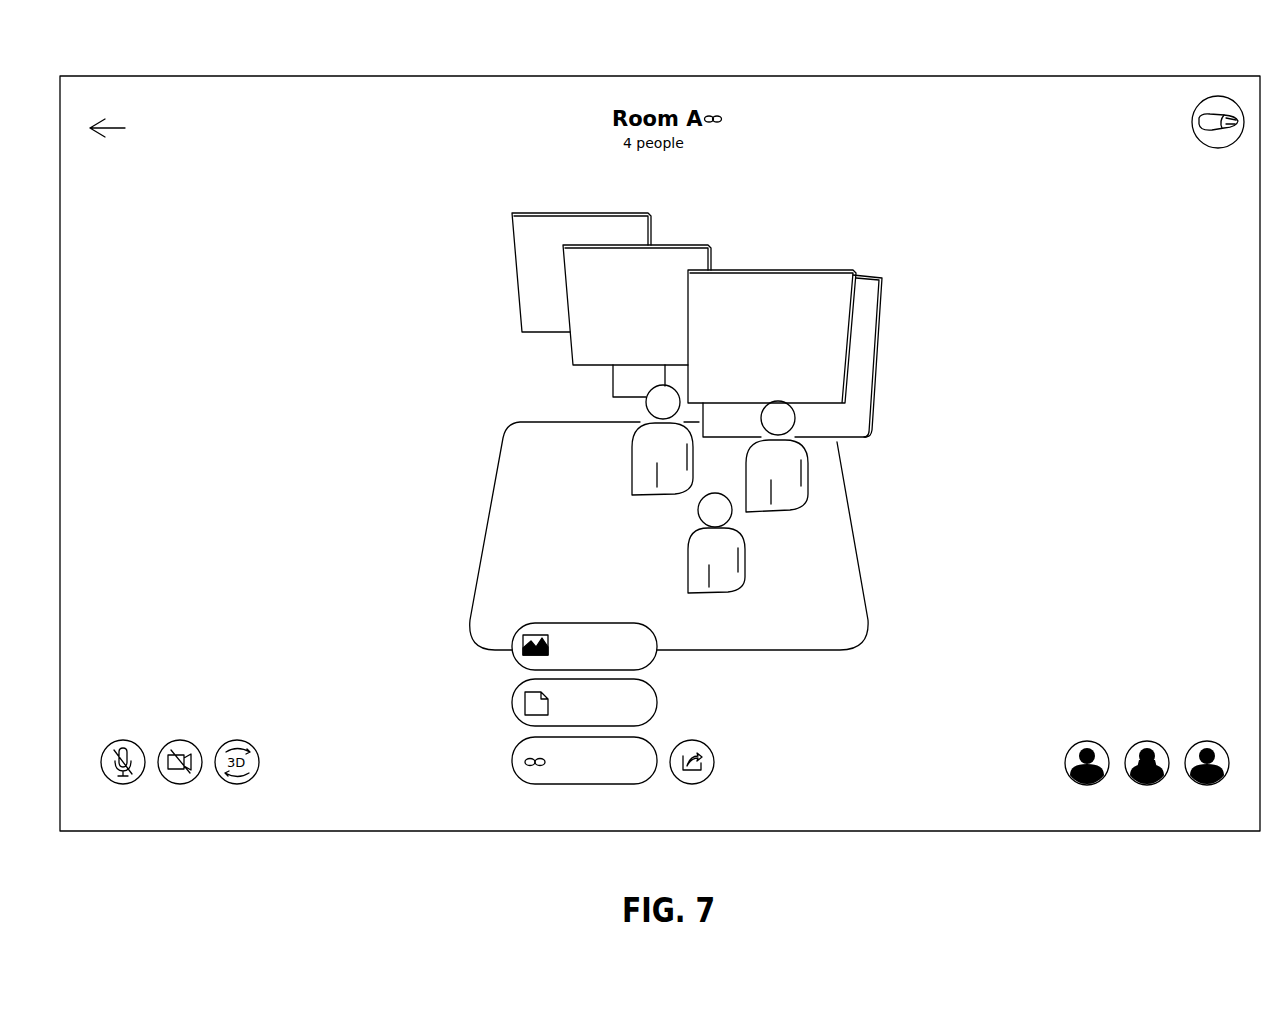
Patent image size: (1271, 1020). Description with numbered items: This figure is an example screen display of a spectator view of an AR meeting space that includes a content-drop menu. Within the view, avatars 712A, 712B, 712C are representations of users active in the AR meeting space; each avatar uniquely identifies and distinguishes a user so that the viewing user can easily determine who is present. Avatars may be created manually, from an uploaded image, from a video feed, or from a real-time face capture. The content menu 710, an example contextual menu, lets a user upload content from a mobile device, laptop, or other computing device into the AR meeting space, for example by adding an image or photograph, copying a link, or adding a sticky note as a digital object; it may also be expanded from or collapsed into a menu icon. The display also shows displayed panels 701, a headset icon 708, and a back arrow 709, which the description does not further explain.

The virtual display panels 701 is at (763, 270).
The headset/XR mode icon 708 is at (1206, 107).
The back arrow 709 is at (109, 126).
The content menu 710 is at (512, 707).
The avatar 712A is at (631, 472).
The avatar 712B is at (808, 463).
The avatar 712C is at (745, 565).